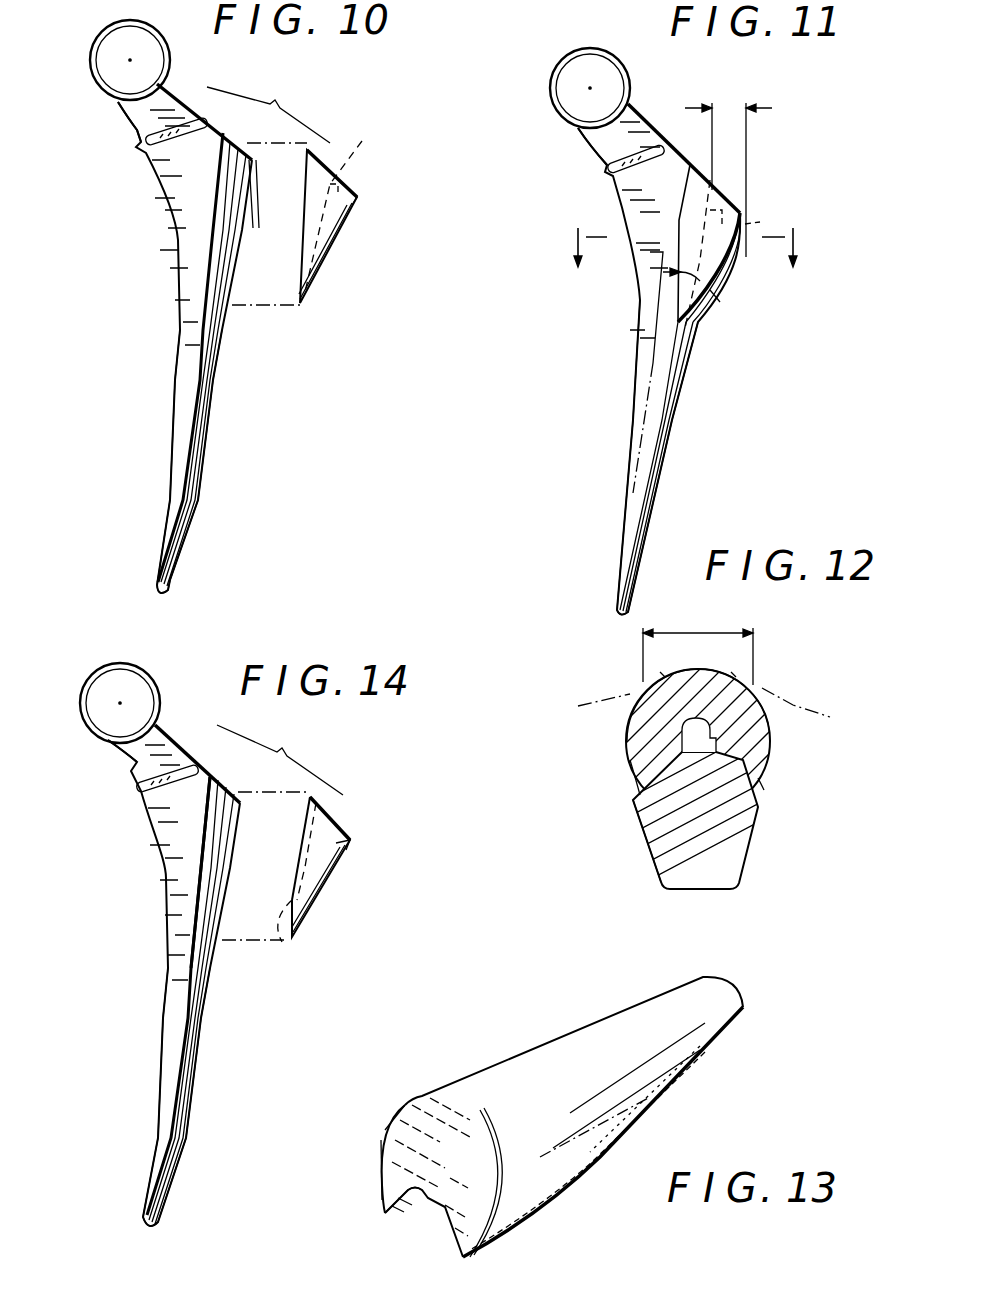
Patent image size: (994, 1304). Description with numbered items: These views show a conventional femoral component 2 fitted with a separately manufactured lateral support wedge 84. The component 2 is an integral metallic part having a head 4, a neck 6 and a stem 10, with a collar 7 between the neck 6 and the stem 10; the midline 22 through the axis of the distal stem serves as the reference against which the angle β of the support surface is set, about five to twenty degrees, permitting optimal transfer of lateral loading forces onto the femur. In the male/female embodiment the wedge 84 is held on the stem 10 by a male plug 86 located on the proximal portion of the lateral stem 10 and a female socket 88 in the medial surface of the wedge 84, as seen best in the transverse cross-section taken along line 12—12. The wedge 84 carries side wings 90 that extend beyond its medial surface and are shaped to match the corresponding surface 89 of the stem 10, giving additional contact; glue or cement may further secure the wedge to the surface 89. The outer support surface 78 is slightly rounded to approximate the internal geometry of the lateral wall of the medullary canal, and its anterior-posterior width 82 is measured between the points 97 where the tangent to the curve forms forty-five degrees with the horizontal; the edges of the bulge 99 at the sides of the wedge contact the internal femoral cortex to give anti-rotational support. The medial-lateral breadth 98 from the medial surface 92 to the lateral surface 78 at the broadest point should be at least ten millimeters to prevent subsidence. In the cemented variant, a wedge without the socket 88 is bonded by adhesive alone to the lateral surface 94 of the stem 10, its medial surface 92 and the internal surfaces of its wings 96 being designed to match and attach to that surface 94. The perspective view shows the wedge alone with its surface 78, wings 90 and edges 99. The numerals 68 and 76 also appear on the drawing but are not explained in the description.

In FIG. 10, the femoral component 2 is at (146, 401).
In FIG. 11, the femoral component 2 is at (627, 430).
In FIG. 14, the femoral component 2 is at (148, 1046).
In FIG. 10, the head 4 is at (106, 48).
In FIG. 11, the head 4 is at (571, 66).
In FIG. 14, the head 4 is at (140, 686).
In FIG. 10, the neck 6 is at (140, 106).
In FIG. 11, the neck 6 is at (607, 135).
In FIG. 14, the neck 6 is at (134, 759).
In FIG. 10, the collar 7 is at (147, 142).
In FIG. 11, the collar 7 is at (615, 165).
In FIG. 14, the collar 7 is at (139, 788).
In FIG. 10, the stem 10 is at (200, 453).
In FIG. 11, the stem 10 is at (647, 498).
In FIG. 12, the stem 10 is at (732, 888).
In FIG. 14, the stem 10 is at (170, 1113).
In FIG. 11, the section line 12— 12 is at (688, 265).
In FIG. 11, the midline of the distal stem 22 is at (646, 405).
In FIG. 10, the reference line 68 is at (366, 148).
In FIG. 11, the reference line 68 is at (760, 222).
In FIG. 12, the keyway 76 is at (682, 745).
In FIG. 10, the support surface 78 is at (334, 248).
In FIG. 12, the support surface 78 is at (707, 670).
In FIG. 14, the support surface 78 is at (331, 881).
In FIG. 13, the support surface 78 is at (569, 1052).
In FIG. 12, the anterior-posterior width 82 is at (698, 628).
In FIG. 10, the lateral support wedge 84 is at (343, 199).
In FIG. 11, the lateral support wedge 84 is at (745, 213).
In FIG. 12, the lateral support wedge 84 is at (720, 693).
In FIG. 10, the male plug 86 is at (257, 197).
In FIG. 12, the female socket 88 is at (642, 691).
In FIG. 10, the surface of the stem 89 is at (237, 263).
In FIG. 12, the surface of the stem 89 is at (763, 775).
In FIG. 11, the side wings 90 is at (700, 184).
In FIG. 14, the side wings 90 is at (352, 840).
In FIG. 13, the side wings 90 is at (653, 1097).
In FIG. 12, the medial surface of the wedge 92 is at (641, 818).
In FIG. 14, the medial surface of the wedge 92 is at (283, 942).
In FIG. 13, the medial surface of the wedge 92 is at (386, 1162).
In FIG. 14, the lateral surface of the stem 94 is at (239, 831).
In FIG. 14, the wings of the wedge 96 is at (306, 822).
In FIG. 13, the wings of the wedge 96 is at (397, 1208).
In FIG. 12, the tangent points 97 is at (705, 712).
In FIG. 11, the medial-lateral breadth 98 is at (730, 106).
In FIG. 12, the bulge 99 is at (628, 758).
In FIG. 13, the bulge 99 is at (380, 1176).